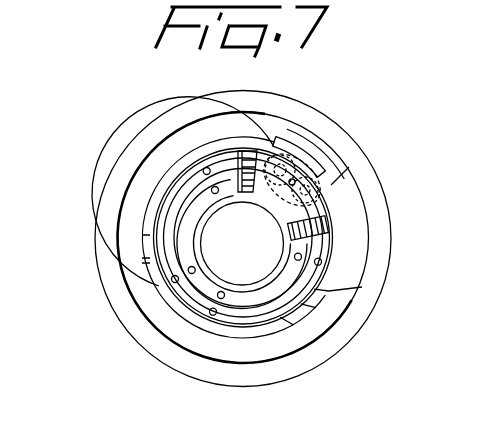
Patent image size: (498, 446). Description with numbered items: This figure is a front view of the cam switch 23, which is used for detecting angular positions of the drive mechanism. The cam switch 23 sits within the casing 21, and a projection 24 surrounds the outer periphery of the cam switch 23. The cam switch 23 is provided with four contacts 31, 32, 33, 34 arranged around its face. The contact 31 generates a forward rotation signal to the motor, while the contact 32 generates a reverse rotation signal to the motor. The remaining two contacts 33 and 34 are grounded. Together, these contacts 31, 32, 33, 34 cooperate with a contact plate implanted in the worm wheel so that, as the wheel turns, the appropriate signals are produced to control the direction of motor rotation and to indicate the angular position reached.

The casing 21 is at (382, 192).
The cam switch 23 is at (192, 163).
The projection 24 is at (157, 183).
The contact 31 is at (172, 280).
The contact 32 is at (188, 268).
The contact 33 is at (218, 297).
The contact 34 is at (213, 315).